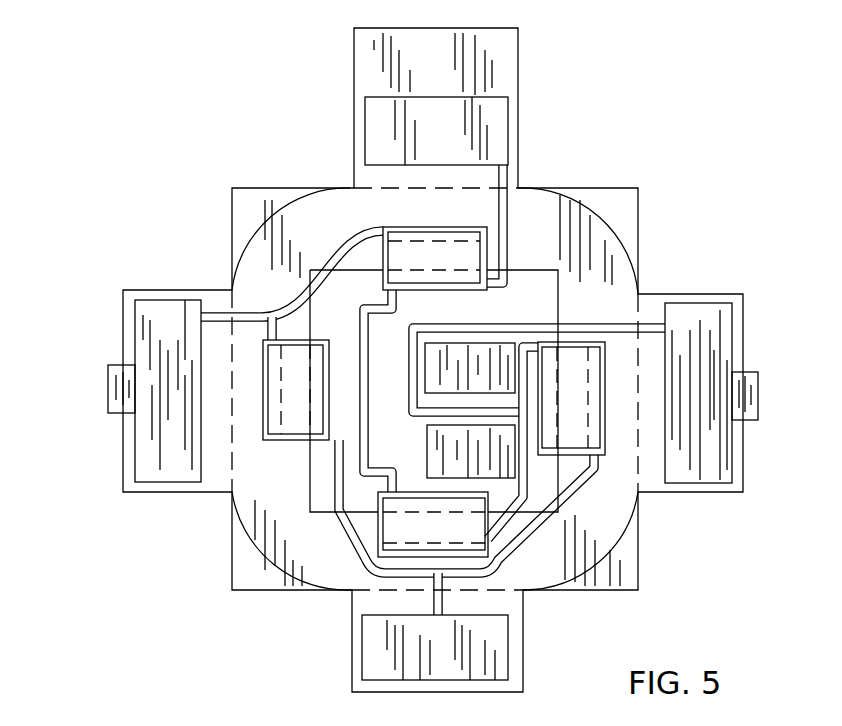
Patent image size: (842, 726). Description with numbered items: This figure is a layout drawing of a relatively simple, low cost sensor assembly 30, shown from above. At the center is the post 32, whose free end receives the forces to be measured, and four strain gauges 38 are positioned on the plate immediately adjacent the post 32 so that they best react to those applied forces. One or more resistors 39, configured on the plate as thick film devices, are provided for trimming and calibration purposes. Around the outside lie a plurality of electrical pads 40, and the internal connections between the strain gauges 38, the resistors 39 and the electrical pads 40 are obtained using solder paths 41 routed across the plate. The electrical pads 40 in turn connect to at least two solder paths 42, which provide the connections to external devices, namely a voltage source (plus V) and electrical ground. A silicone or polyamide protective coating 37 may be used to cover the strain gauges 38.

The sensor assembly 30 is at (570, 178).
The post 32 is at (328, 240).
The protective coating 37 is at (243, 215).
The strain gauges 38 is at (427, 255).
The resistors 39 is at (472, 362).
The electrical pads 40 is at (162, 337).
The solder paths 41 is at (366, 562).
The solder paths 42 is at (118, 363).